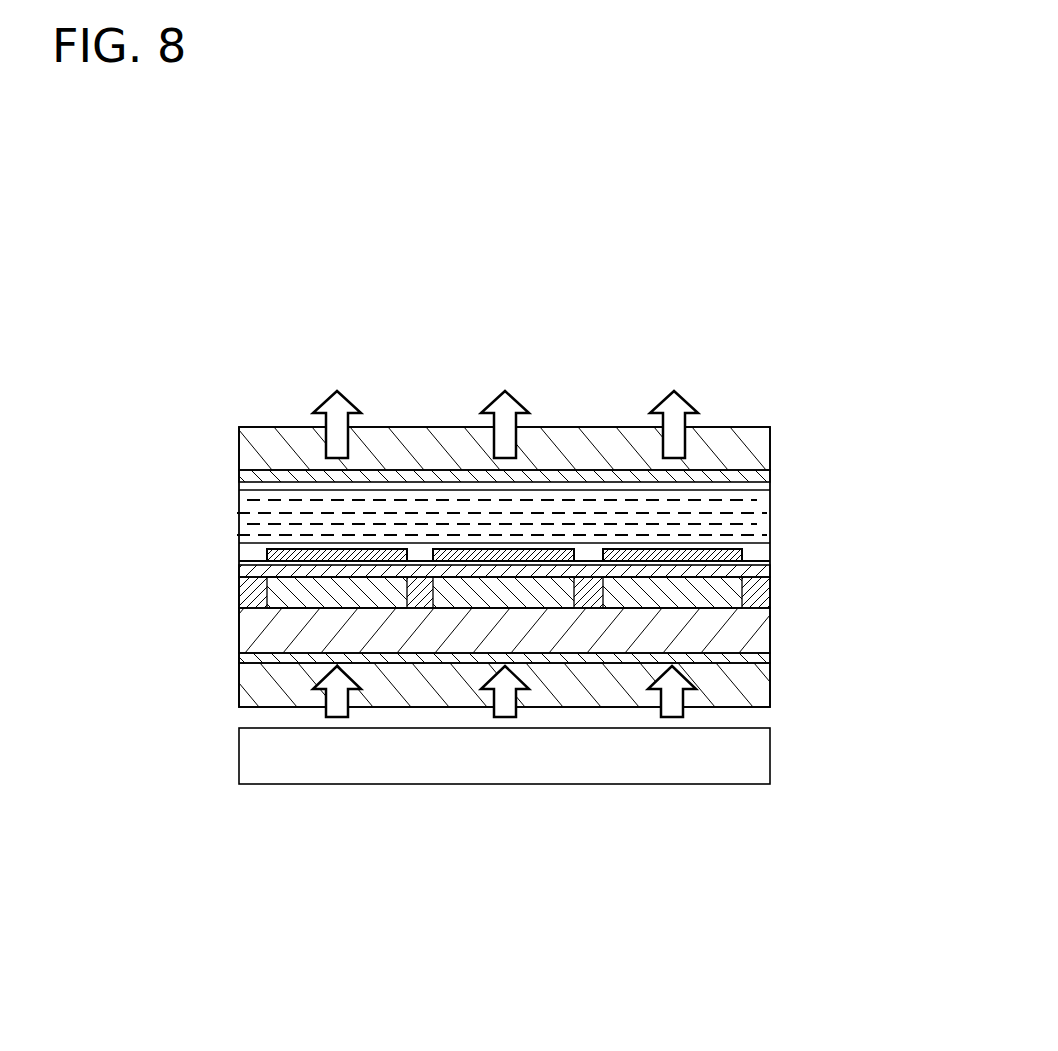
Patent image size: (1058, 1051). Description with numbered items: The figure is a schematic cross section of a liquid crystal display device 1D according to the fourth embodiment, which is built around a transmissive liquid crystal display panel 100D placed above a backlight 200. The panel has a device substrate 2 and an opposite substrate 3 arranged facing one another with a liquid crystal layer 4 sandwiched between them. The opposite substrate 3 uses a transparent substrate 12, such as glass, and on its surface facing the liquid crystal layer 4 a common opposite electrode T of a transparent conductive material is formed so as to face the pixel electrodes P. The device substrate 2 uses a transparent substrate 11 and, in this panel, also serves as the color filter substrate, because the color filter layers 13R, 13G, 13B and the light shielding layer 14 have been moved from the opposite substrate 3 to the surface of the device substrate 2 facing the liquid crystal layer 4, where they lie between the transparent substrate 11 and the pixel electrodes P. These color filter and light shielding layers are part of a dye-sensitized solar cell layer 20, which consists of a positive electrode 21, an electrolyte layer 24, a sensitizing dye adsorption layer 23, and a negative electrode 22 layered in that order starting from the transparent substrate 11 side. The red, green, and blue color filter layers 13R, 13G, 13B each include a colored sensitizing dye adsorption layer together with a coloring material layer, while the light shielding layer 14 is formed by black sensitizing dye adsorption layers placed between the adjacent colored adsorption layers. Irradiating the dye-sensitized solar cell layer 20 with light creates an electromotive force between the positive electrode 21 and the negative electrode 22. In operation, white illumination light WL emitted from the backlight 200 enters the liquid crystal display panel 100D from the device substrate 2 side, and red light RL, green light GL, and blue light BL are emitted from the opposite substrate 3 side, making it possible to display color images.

The liquid crystal display device 1D is at (733, 321).
The liquid crystal display panel 100D is at (237, 583).
The opposite substrate 3 is at (237, 462).
The transparent substrate 12 is at (765, 452).
The opposite electrode T is at (765, 477).
The liquid crystal layer 4 is at (237, 527).
The device substrate 2 is at (237, 680).
The transparent substrate 11 is at (765, 683).
The dye-sensitized solar cell layer 20 is at (852, 565).
The positive electrode 21 is at (765, 659).
The negative electrode 22 is at (765, 572).
The sensitizing dye adsorption layer 23 is at (542, 713).
The electrolyte layer 24 is at (765, 633).
The red color filter layer 13R is at (300, 595).
The green color filter layer 13G is at (482, 595).
The blue color filter layer 13B is at (725, 595).
The light shielding layer 14 is at (422, 588).
The backlight 200 is at (765, 750).
The pixel electrode P is at (365, 556).
The red light RL is at (334, 392).
The green light GL is at (501, 392).
The blue light BL is at (679, 392).
The white illumination light WL is at (349, 700).